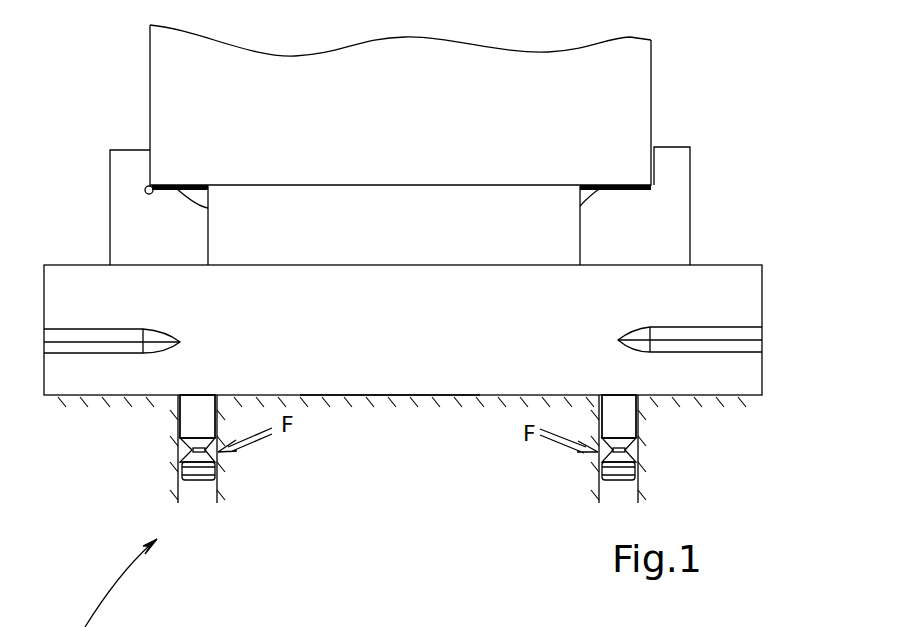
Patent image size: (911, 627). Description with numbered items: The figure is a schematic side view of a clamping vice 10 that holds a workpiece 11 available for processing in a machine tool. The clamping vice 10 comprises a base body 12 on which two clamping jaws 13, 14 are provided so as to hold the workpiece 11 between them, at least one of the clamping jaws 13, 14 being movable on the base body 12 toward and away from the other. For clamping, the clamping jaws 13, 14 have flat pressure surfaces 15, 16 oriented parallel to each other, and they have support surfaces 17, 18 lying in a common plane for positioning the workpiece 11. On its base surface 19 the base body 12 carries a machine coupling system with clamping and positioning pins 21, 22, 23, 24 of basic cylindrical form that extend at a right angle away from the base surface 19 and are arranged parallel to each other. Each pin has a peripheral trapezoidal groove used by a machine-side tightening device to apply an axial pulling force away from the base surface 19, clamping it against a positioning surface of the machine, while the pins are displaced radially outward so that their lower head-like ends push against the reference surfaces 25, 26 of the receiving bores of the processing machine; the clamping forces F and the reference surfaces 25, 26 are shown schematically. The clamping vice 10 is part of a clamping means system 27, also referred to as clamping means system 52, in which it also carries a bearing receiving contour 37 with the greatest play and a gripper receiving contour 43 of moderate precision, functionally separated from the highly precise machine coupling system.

The clamping vice 10 is at (735, 179).
The workpiece 11 is at (405, 109).
The base body 12 is at (405, 308).
The clamping jaw 13 is at (167, 239).
The clamping jaw 14 is at (642, 232).
The pressure surface 15 is at (148, 186).
The pressure surface 16 is at (654, 167).
The support surface 17 is at (208, 209).
The support surface 18 is at (580, 206).
The base surface 19 is at (383, 397).
The clamping and positioning pin 21 is at (222, 465).
The clamping and positioning pin 22 is at (197, 416).
The clamping and positioning pin 23 is at (590, 466).
The clamping and positioning pin 24 is at (619, 416).
The reference surface 25 is at (172, 449).
The reference surface 26 is at (640, 461).
The clamping means system 27 is at (764, 618).
The bearing receiving contour 37 is at (98, 317).
The gripper receiving contour 43 is at (692, 319).
The clamping means system 52 is at (805, 626).